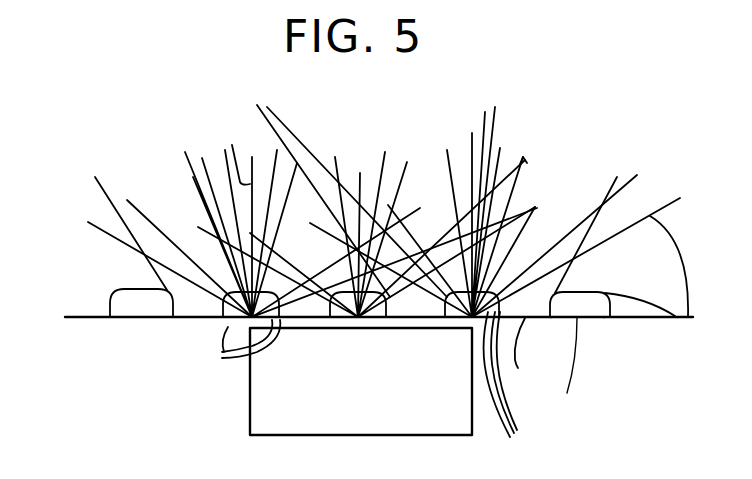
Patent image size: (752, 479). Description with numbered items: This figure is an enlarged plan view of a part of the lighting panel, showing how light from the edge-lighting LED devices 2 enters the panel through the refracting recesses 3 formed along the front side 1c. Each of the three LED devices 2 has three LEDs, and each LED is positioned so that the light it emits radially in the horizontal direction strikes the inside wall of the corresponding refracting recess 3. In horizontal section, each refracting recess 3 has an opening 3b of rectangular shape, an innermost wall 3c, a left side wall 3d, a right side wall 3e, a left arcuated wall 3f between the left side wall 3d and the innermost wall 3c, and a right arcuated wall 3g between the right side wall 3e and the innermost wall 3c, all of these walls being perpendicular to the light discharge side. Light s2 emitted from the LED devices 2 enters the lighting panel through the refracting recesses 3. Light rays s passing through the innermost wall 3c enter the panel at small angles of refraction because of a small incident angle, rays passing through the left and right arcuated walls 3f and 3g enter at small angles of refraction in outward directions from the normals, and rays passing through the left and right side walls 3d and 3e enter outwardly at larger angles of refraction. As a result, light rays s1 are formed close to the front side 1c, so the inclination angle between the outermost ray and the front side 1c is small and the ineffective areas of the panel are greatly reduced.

The front side 1c is at (89, 318).
The LED device 2 is at (250, 405).
The refracting recess 3 is at (150, 301).
The opening 3b is at (568, 372).
The innermost wall 3c is at (584, 293).
The left side wall 3d is at (558, 318).
The right side wall 3e is at (604, 318).
The left arcuated wall 3f is at (525, 360).
The right arcuated wall 3g is at (675, 318).
The light rays s is at (147, 210).
The light rays close to the front side s1 is at (112, 236).
The light emitted from the LED devices s2 is at (370, 385).